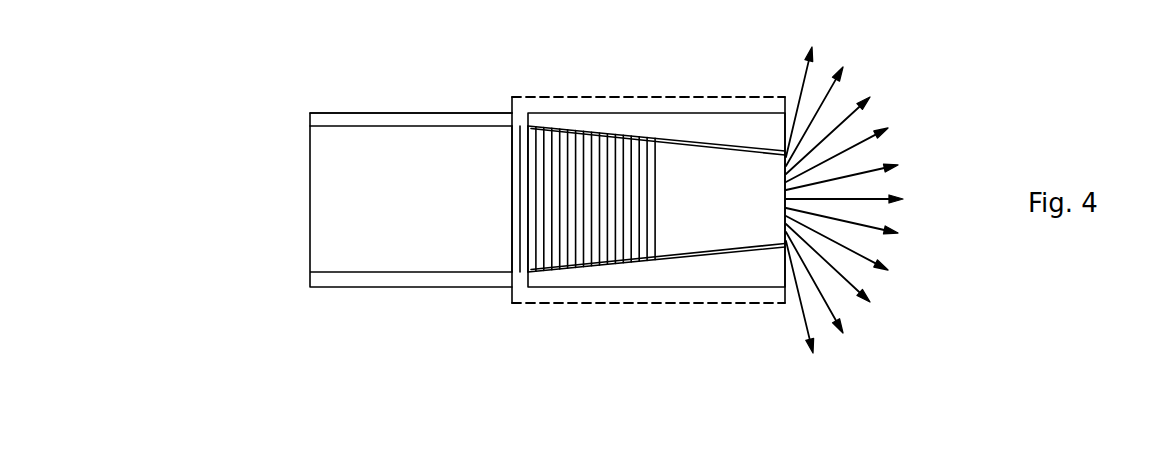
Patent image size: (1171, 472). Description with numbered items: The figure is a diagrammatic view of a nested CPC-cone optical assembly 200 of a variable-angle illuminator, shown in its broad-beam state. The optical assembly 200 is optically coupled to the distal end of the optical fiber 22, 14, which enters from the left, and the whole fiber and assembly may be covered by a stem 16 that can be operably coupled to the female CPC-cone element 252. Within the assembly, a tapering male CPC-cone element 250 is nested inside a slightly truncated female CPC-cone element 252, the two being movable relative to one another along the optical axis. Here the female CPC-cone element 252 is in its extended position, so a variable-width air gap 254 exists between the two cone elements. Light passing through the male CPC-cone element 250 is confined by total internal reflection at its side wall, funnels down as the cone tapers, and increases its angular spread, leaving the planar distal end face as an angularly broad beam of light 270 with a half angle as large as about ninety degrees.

The optical fiber 14 is at (352, 167).
The optical fiber 22 is at (352, 167).
The stem 16 is at (362, 112).
The CPC-cone optical assembly 200 is at (524, 303).
The male CPC-cone element 250 is at (600, 255).
The female CPC-cone element 252 is at (737, 288).
The air gap 254 is at (690, 263).
The angularly broad beam of light 270 is at (838, 25).